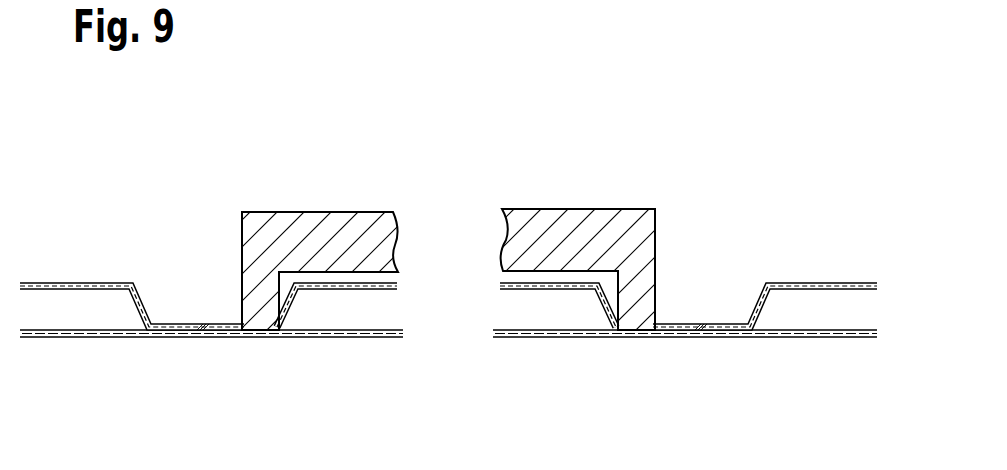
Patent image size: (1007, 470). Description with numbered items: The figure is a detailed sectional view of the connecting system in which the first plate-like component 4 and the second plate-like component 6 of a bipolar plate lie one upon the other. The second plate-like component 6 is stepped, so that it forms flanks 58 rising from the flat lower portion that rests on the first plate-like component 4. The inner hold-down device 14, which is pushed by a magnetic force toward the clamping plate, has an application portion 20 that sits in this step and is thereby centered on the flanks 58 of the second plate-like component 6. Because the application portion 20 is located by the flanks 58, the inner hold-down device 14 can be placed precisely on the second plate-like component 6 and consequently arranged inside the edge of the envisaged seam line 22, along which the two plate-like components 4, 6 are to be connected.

The first plate-like component 4 is at (67, 338).
The second plate-like component 6 is at (51, 284).
The inner hold-down device 14 is at (574, 221).
The application portion 20 is at (668, 281).
The seam line 22 is at (194, 310).
The flanks 58 is at (303, 315).